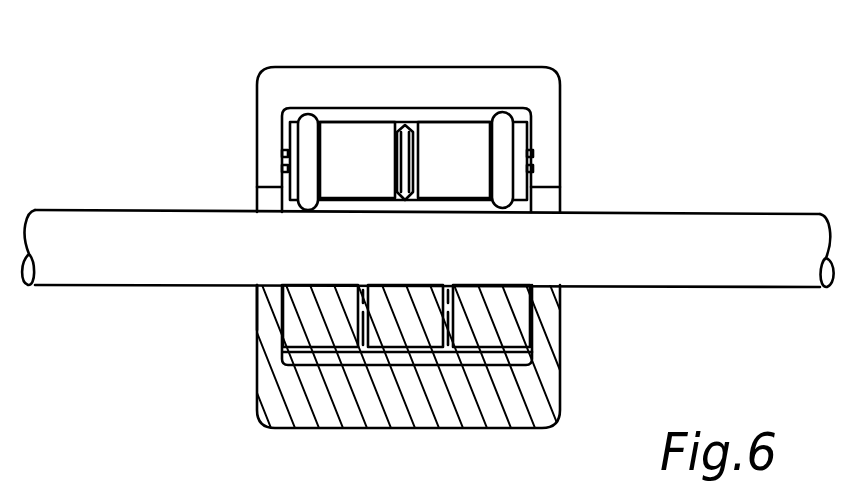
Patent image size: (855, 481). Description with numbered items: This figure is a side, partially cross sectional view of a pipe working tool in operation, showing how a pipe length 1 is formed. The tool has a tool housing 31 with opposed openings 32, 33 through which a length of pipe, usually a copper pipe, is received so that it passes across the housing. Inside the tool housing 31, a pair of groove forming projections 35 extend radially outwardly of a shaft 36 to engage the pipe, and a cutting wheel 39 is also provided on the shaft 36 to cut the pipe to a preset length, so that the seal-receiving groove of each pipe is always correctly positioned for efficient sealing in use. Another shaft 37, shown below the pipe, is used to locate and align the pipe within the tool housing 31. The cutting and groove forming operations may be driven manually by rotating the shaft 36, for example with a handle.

The pipe length 1 is at (722, 212).
The tool housing 31 is at (520, 85).
The opening 32 is at (560, 293).
The opening 33 is at (255, 293).
The groove forming projections 35 is at (308, 118).
The shaft 36 is at (517, 183).
The shaft 37 is at (507, 330).
The cutting wheel 39 is at (405, 127).